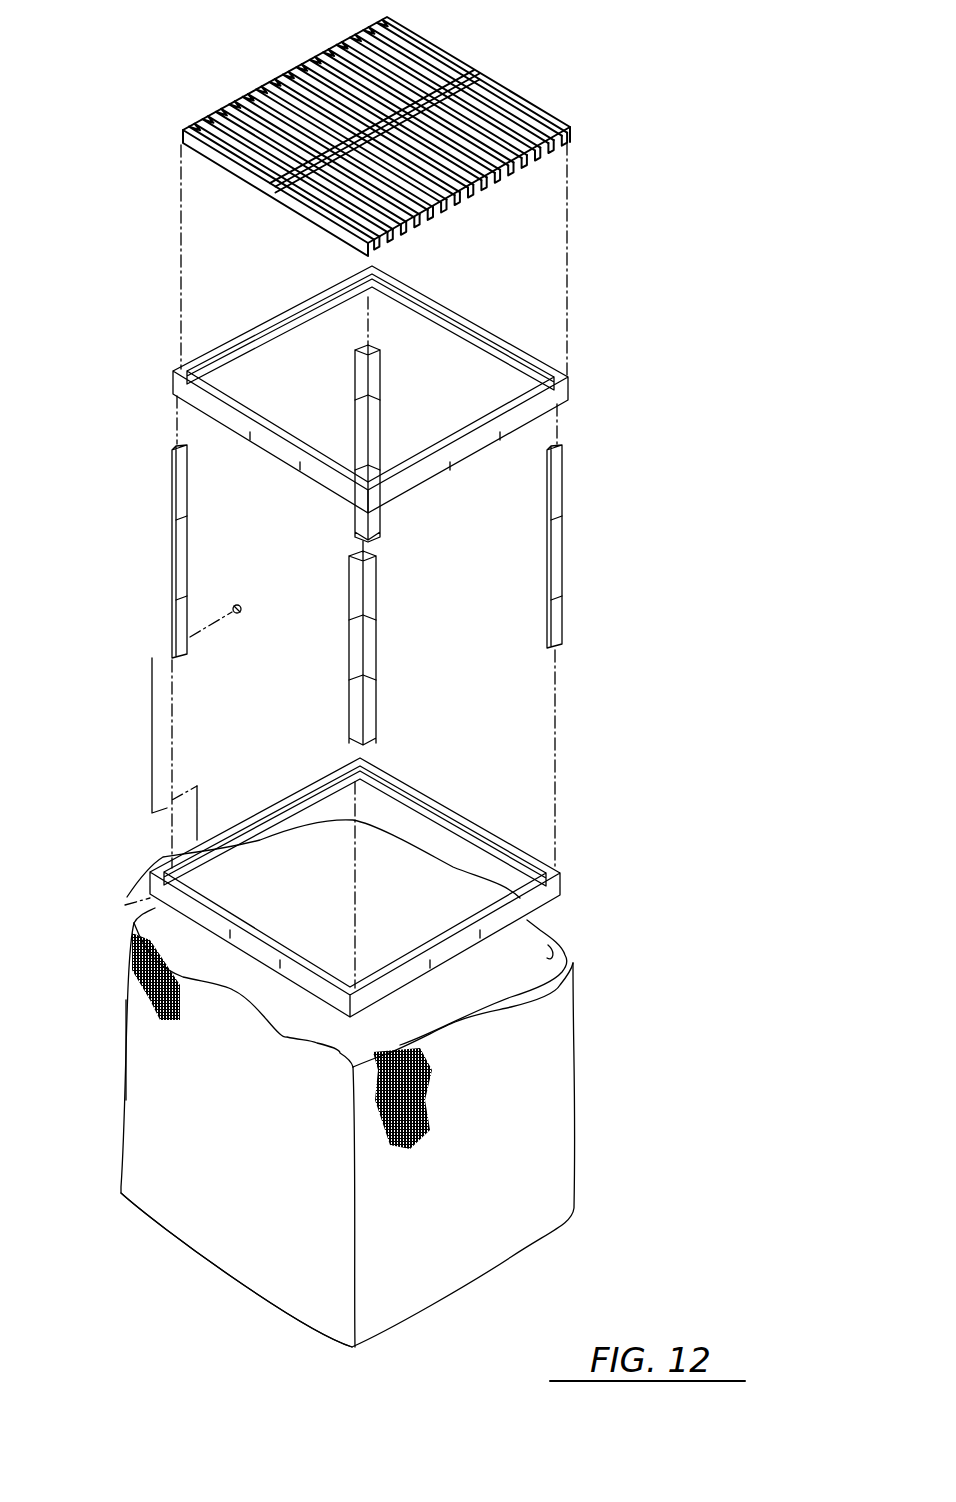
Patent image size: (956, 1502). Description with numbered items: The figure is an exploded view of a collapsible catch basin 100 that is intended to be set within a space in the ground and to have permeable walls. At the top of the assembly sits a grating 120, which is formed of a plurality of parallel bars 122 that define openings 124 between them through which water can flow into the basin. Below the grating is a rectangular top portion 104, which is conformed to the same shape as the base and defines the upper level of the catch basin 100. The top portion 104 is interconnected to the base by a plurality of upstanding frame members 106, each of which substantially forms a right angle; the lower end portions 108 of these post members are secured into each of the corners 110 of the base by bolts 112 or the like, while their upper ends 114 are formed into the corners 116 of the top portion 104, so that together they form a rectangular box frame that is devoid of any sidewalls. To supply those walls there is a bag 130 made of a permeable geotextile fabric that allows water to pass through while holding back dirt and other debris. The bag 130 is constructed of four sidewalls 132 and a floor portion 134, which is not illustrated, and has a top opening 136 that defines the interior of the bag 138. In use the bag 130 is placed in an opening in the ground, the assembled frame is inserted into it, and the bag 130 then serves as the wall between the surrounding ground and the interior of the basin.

The catch basin 100 is at (667, 336).
The top portion 104 is at (173, 396).
The frame members 106 is at (175, 540).
The lower end portions 108 is at (172, 646).
The corners 110 is at (150, 870).
The bolts 112 is at (278, 570).
The upper ends 114 is at (563, 452).
The corners 116 is at (567, 372).
The grating 120 is at (460, 70).
The parallel bars 122 is at (518, 110).
The openings 124 is at (326, 90).
The bag 130 is at (546, 1073).
The sidewalls 132 is at (158, 1058).
The floor portion 134 is at (212, 1274).
The top opening 136 is at (550, 940).
The interior of the bag 138 is at (455, 1014).